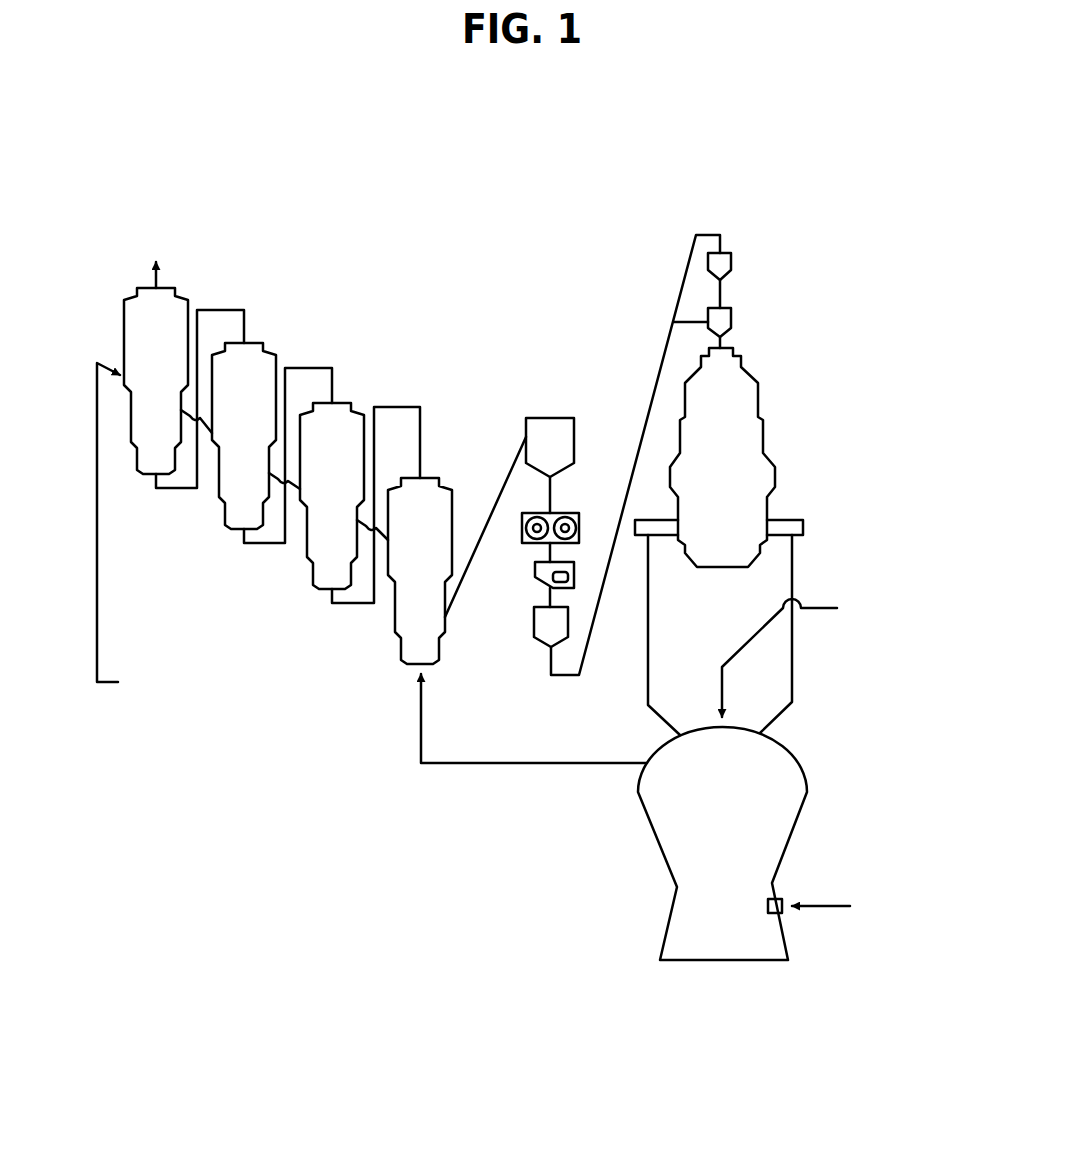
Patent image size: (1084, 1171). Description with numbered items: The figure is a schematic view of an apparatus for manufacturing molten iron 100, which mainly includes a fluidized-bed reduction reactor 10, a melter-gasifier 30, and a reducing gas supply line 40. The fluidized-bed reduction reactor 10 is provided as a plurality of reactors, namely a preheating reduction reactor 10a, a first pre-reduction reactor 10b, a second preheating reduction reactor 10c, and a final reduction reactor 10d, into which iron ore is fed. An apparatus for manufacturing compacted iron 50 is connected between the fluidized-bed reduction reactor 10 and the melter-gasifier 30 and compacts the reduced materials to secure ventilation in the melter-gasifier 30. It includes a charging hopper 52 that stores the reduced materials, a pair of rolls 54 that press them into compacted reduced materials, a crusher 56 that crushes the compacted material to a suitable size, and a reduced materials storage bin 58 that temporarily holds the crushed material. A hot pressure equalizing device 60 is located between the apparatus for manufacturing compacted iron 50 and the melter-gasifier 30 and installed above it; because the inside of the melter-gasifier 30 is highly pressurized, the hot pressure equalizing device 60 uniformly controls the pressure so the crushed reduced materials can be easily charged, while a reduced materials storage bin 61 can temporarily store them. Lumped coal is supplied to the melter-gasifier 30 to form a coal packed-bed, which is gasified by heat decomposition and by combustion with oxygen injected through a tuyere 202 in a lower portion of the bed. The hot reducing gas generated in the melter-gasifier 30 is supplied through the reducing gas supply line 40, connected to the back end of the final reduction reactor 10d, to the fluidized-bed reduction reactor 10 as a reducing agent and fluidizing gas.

The apparatus for manufacturing molten iron 100 is at (523, 146).
The fluidized-bed reduction reactor 10 is at (340, 278).
The preheating reduction reactor 10a is at (168, 286).
The first pre-reduction reactor 10b is at (257, 343).
The second preheating reduction reactor 10c is at (345, 402).
The final reduction reactor 10d is at (435, 477).
The reducing gas supply line 40 is at (550, 762).
The apparatus for manufacturing compacted iron 50 is at (567, 374).
The charging hopper 52 is at (535, 417).
The pair of rolls 54 is at (575, 513).
The crusher 56 is at (535, 573).
The reduced materials storage bin 58 is at (534, 630).
The hot pressure equalizing device 60 is at (731, 278).
The reduced materials storage bin 61 is at (760, 395).
The melter-gasifier 30 is at (767, 962).
The tuyere 202 is at (782, 913).